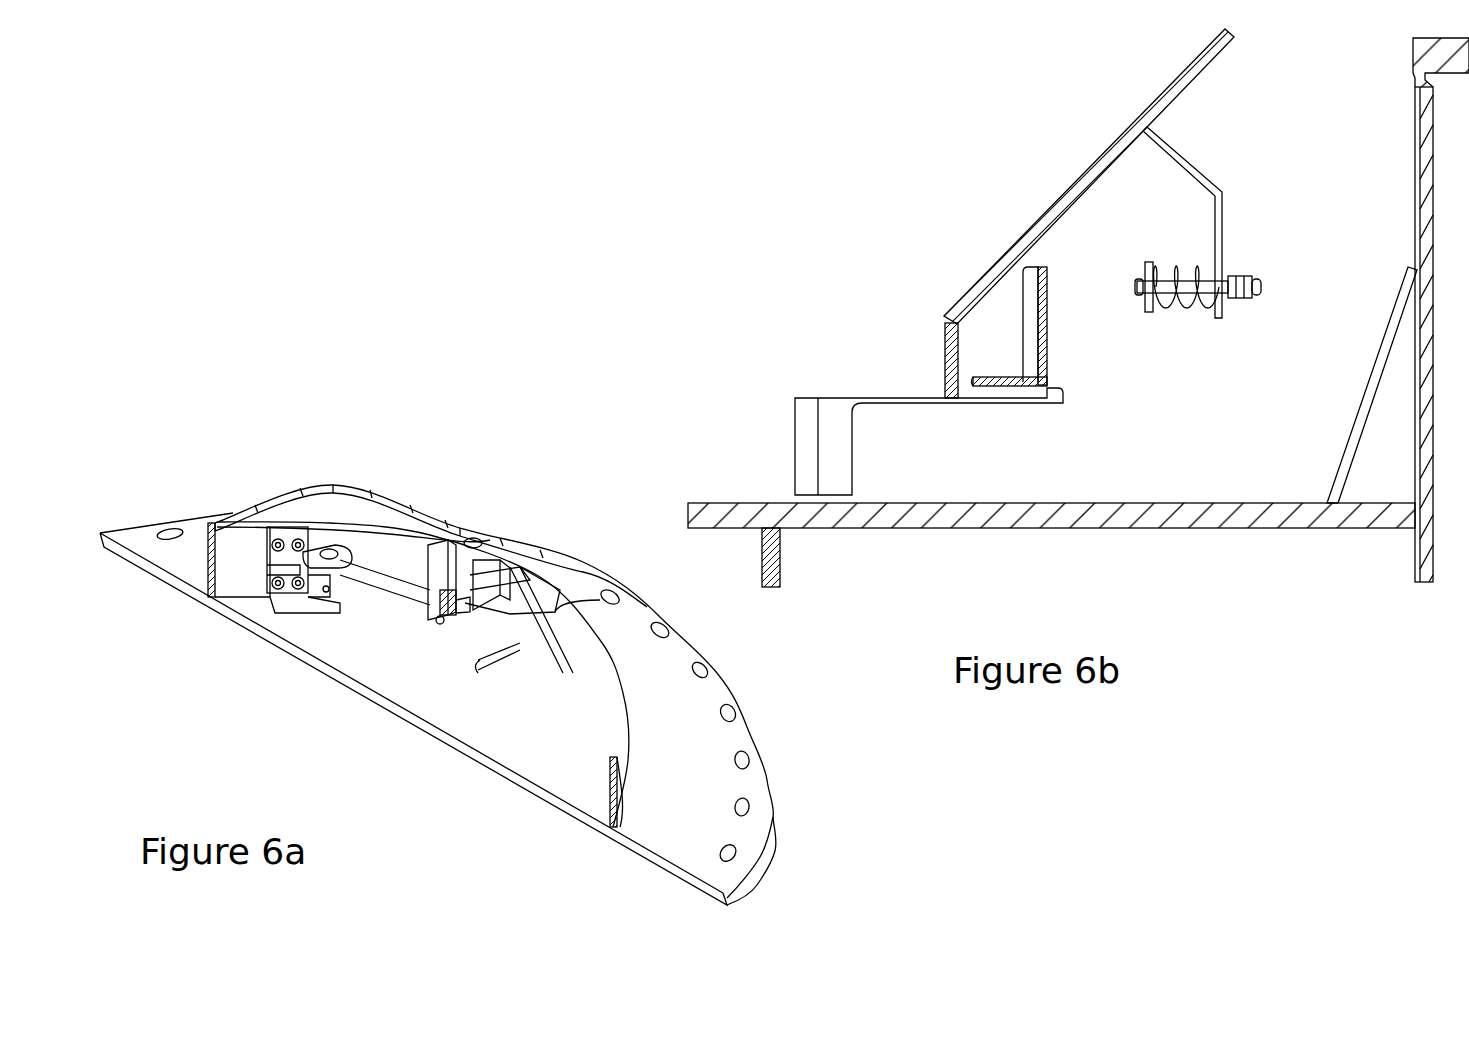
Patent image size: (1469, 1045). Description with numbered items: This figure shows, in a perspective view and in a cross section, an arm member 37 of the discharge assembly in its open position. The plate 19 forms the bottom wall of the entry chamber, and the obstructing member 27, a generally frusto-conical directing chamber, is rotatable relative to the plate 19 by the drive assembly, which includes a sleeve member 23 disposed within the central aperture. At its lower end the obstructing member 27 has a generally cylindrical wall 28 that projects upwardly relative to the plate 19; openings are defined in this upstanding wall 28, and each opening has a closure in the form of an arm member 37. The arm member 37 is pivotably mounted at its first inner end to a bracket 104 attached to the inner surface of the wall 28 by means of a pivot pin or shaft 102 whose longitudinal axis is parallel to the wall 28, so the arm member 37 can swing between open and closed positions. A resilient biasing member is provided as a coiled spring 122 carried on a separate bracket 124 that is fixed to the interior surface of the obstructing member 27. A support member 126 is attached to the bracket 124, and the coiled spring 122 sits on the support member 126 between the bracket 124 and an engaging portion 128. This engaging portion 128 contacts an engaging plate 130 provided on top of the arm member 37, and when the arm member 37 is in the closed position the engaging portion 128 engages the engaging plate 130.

In FIG. 6B, the plate 19 is at (1224, 510).
In FIG. 6A, the plate 19 is at (712, 794).
In FIG. 6B, the sleeve member 23 is at (1415, 180).
In FIG. 6B, the obstructing member 27 is at (1130, 127).
In FIG. 6A, the obstructing member 27 is at (557, 633).
In FIG. 6B, the cylindrical wall 28 is at (945, 365).
In FIG. 6A, the cylindrical wall 28 is at (248, 565).
In FIG. 6B, the arm member 37 is at (985, 408).
In FIG. 6A, the arm member 37 is at (383, 582).
In FIG. 6A, the pivot pin or shaft 102 is at (347, 541).
In FIG. 6A, the bracket 104 is at (308, 620).
In FIG. 6B, the coiled spring 122 is at (1165, 264).
In FIG. 6A, the coiled spring 122 is at (450, 620).
In FIG. 6B, the bracket 124 is at (1216, 165).
In FIG. 6A, the bracket 124 is at (446, 552).
In FIG. 6B, the support member 126 is at (1202, 290).
In FIG. 6A, the support member 126 is at (453, 612).
In FIG. 6B, the engaging portion 128 is at (1139, 292).
In FIG. 6B, the engaging plate 130 is at (1033, 327).